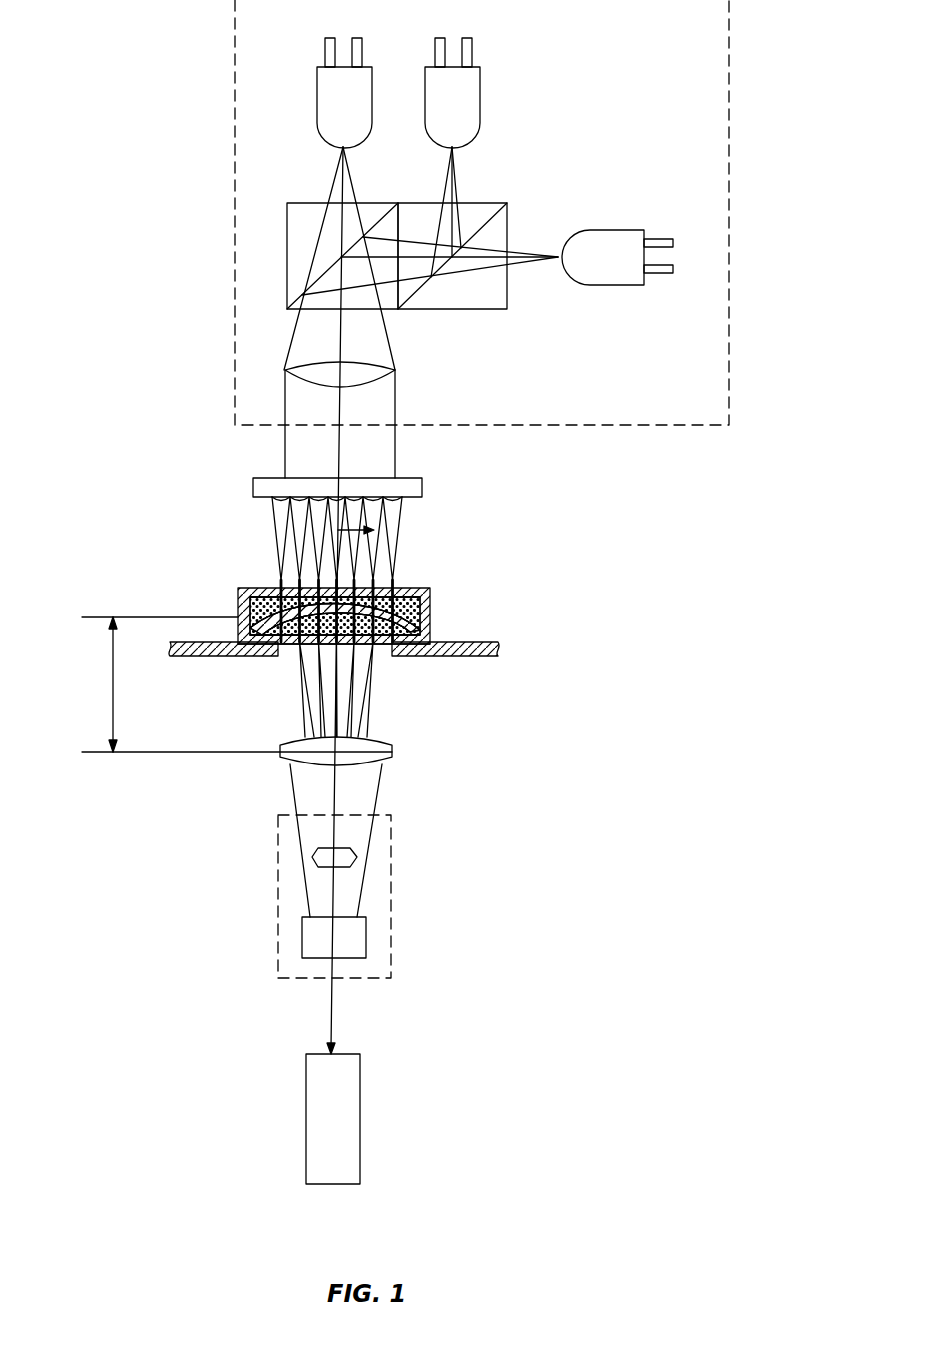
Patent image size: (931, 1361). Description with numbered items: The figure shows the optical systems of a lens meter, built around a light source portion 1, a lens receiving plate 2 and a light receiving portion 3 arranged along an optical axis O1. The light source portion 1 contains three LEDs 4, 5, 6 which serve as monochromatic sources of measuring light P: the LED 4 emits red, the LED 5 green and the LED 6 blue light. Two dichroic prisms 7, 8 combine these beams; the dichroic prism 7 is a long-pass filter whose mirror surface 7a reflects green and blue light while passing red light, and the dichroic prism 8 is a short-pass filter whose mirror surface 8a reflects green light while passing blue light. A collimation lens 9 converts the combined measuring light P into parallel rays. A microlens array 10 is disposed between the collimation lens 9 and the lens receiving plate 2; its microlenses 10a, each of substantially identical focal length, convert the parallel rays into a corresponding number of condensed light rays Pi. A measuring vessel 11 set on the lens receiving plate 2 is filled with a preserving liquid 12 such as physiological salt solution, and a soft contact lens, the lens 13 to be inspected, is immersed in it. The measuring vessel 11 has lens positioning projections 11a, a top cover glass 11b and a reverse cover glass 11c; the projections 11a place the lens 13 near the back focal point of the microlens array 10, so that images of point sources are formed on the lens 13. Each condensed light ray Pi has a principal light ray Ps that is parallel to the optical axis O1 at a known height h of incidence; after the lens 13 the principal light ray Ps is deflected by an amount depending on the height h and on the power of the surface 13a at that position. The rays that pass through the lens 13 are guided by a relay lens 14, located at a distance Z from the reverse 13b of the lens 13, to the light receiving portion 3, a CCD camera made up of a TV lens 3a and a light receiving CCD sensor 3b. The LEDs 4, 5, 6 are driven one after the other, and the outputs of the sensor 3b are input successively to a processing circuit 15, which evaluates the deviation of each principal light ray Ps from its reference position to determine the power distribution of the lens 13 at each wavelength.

The light source portion 1 is at (729, 190).
The lens receiving plate 2 is at (487, 646).
The light receiving portion 3 is at (391, 918).
The TV lens 3a is at (313, 848).
The light receiving CCD sensor 3b is at (302, 928).
The LED 4 is at (333, 110).
The LED 5 is at (460, 103).
The LED 6 is at (600, 247).
The dichroic prism 7 is at (297, 250).
The mirror surface 7a is at (385, 215).
The dichroic prism 8 is at (497, 300).
The mirror surface 8a is at (498, 212).
The collimation lens 9 is at (380, 377).
The microlens array 10 is at (408, 477).
The microlenses 10a is at (420, 500).
The measuring vessel 11 is at (228, 612).
The lens positioning projections 11a is at (283, 644).
The top cover glass 11b is at (300, 582).
The reverse cover glass 11c is at (362, 646).
The preserving liquid 12 is at (420, 604).
The lens to be inspected 13 is at (380, 580).
The surface of the lens 13a is at (248, 603).
The reverse of the lens 13b is at (318, 633).
The relay lens 14 is at (392, 745).
The processing circuit 15 is at (360, 1108).
The optical axis O1 is at (340, 447).
The measuring light P is at (397, 407).
The condensed light rays Pi is at (400, 545).
The principal light ray Ps is at (374, 520).
The height of incidence h is at (368, 492).
The distance Z is at (237, 684).